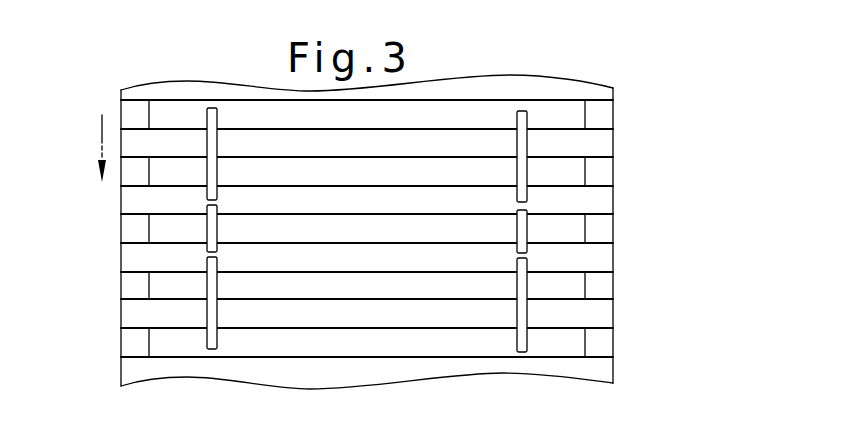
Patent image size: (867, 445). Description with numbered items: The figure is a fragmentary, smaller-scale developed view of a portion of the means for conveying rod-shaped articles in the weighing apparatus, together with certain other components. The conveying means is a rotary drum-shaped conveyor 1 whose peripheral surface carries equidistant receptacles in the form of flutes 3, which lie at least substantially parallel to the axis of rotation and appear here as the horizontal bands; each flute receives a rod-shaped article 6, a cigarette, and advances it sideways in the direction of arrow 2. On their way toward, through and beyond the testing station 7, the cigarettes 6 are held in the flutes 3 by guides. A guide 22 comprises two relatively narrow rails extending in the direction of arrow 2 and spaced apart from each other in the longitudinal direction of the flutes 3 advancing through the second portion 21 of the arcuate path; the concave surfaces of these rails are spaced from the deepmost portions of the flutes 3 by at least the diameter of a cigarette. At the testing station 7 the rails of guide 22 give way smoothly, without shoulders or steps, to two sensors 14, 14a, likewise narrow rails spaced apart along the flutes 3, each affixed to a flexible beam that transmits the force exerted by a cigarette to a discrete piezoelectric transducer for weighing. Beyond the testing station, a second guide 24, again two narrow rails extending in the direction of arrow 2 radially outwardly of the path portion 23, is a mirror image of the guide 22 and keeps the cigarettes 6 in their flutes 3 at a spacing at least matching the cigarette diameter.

The rotary drum-shaped conveyor 1 is at (630, 96).
The arrow 2 is at (102, 134).
The flutes 3 is at (606, 117).
The rod-shaped articles 6 is at (170, 105).
The testing station 7 is at (590, 205).
The sensor 14 is at (210, 247).
The sensor 14a is at (525, 232).
The second portion of the arcuate path 21 is at (636, 174).
The guide 22 is at (208, 193).
The path portion 23 is at (586, 317).
The second guide 24 is at (210, 308).